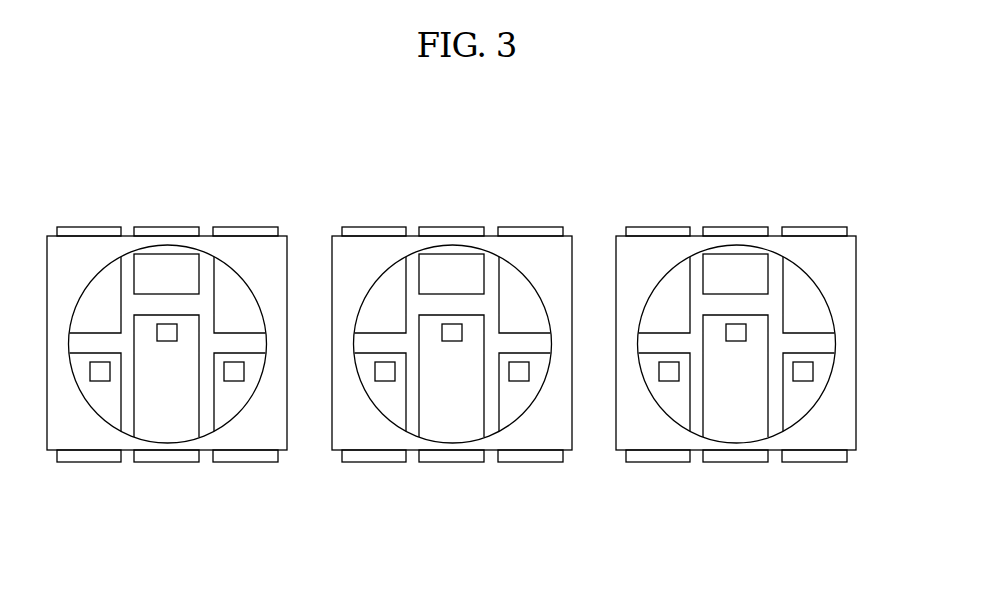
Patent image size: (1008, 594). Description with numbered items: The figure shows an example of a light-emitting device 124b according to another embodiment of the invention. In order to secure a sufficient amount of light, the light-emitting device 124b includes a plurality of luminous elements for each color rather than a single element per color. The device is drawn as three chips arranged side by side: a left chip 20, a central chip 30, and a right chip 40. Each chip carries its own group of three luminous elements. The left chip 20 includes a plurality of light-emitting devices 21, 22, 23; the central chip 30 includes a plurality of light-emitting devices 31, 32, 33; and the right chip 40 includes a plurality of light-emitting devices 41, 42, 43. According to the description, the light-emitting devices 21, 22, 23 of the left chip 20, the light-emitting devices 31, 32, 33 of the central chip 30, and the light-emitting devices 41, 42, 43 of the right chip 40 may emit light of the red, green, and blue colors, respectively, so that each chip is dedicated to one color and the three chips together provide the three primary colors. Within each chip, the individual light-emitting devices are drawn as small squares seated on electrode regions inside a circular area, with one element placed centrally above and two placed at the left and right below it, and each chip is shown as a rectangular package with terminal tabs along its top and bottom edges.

The light-emitting device 124b is at (662, 166).
The left chip 20 is at (287, 236).
The light-emitting device 21 is at (100, 381).
The light-emitting device 22 is at (167, 341).
The light-emitting device 23 is at (234, 381).
The central chip 30 is at (572, 236).
The light-emitting device 31 is at (385, 381).
The light-emitting device 32 is at (452, 341).
The light-emitting device 33 is at (519, 381).
The right chip 40 is at (856, 236).
The light-emitting device 41 is at (669, 381).
The light-emitting device 42 is at (736, 341).
The light-emitting device 43 is at (803, 381).